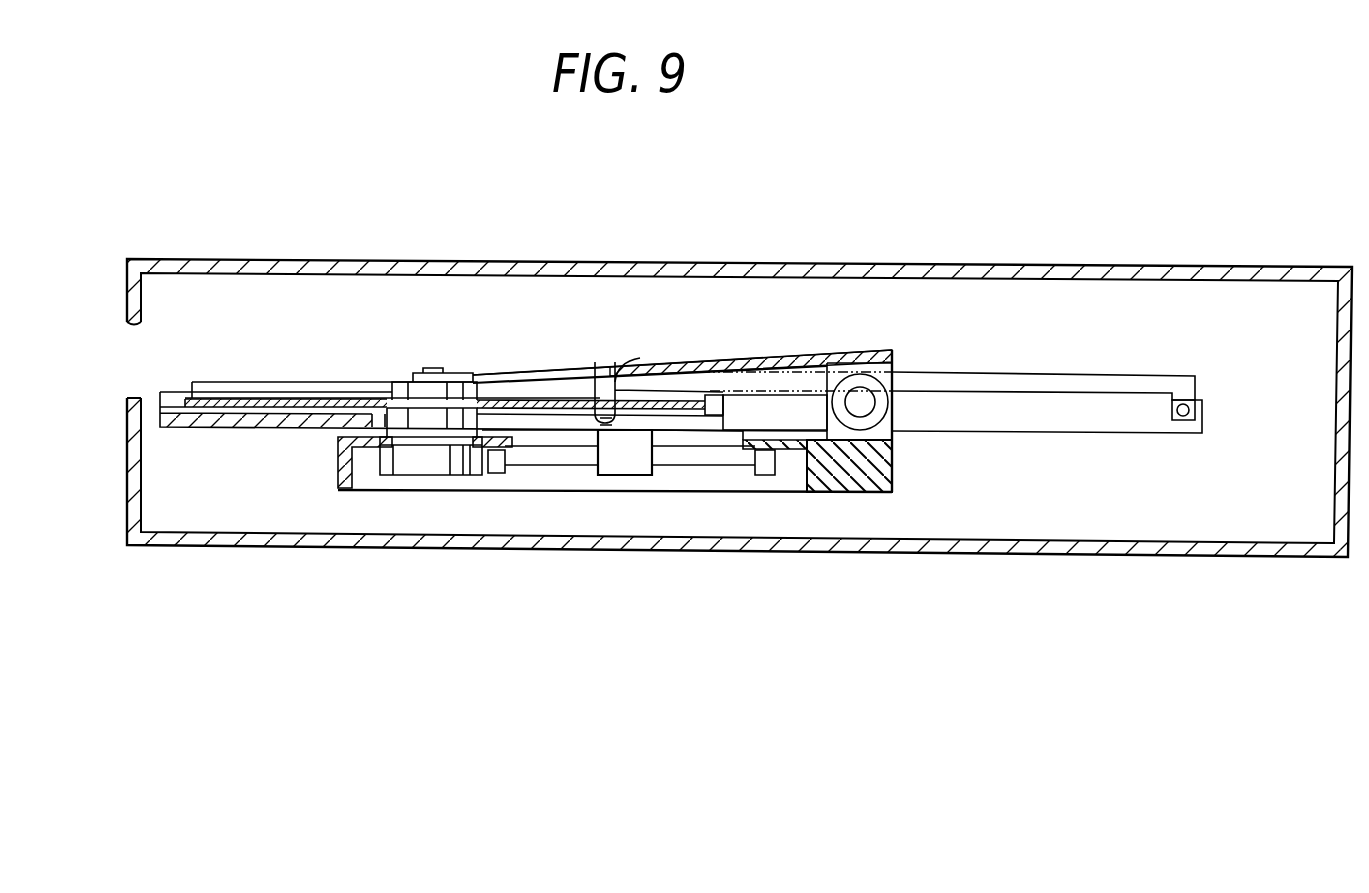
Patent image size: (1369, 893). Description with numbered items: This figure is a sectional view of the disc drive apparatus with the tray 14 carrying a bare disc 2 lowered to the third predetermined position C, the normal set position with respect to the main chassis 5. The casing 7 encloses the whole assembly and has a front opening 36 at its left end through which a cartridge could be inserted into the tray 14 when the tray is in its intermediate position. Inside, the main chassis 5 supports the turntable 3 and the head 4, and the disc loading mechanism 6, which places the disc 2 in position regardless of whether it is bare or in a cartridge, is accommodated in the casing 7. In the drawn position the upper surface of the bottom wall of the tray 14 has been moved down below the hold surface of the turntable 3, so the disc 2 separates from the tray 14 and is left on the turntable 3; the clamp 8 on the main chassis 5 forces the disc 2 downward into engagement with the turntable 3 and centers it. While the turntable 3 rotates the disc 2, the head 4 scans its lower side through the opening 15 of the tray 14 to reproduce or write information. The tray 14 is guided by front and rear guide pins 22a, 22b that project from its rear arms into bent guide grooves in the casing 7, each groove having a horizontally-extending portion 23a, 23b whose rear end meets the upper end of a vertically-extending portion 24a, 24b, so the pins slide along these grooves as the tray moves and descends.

The disc 2 is at (332, 395).
The turntable 3 is at (443, 417).
The head 4 is at (630, 463).
The main chassis 5 is at (858, 485).
The disc loading mechanism 6 is at (399, 316).
The casing 7 is at (452, 262).
The clamp 8 is at (545, 368).
The tray 14 is at (274, 430).
The opening 15 is at (557, 420).
The front guide pin 22a is at (605, 368).
The rear guide pin 22b is at (1185, 417).
The horizontally-extending portion of front guide groove 23a is at (585, 365).
The horizontally-extending portion of rear guide groove 23b is at (1110, 373).
The vertically-extending portion of front guide groove 24a is at (632, 370).
The vertically-extending portion of rear guide groove 24b is at (1192, 388).
The front opening 36 is at (135, 322).
The third predetermined position C is at (275, 388).